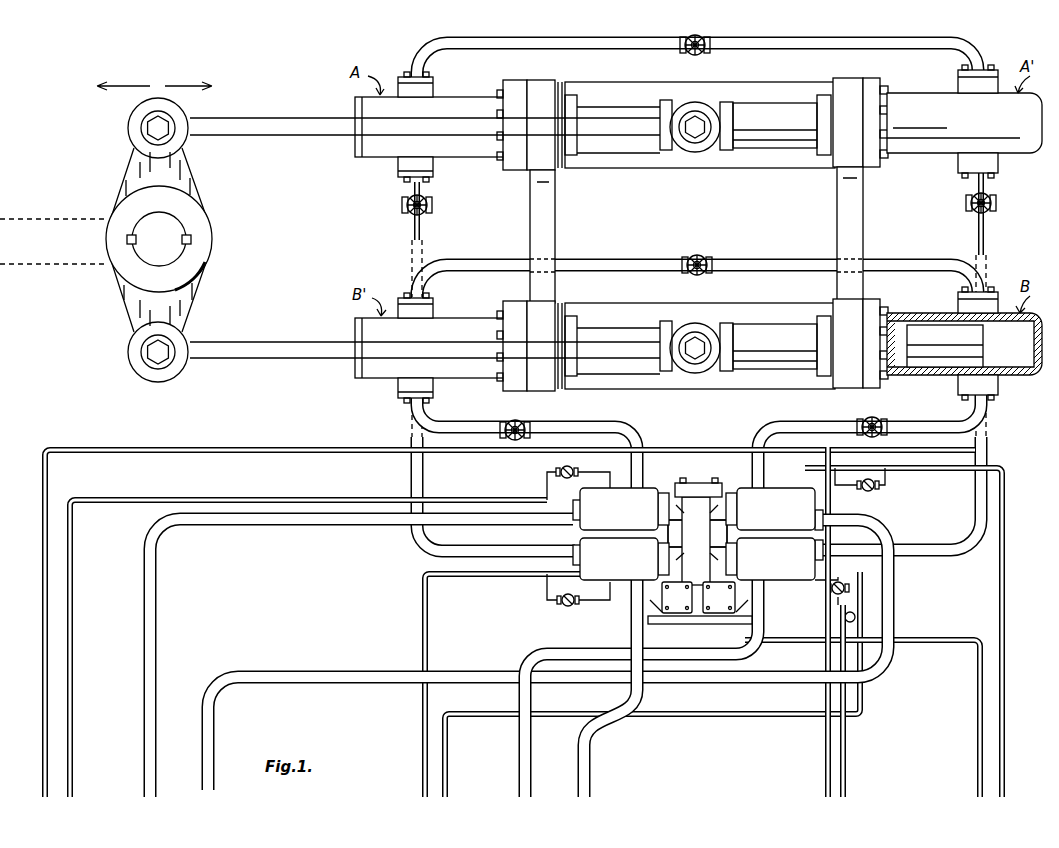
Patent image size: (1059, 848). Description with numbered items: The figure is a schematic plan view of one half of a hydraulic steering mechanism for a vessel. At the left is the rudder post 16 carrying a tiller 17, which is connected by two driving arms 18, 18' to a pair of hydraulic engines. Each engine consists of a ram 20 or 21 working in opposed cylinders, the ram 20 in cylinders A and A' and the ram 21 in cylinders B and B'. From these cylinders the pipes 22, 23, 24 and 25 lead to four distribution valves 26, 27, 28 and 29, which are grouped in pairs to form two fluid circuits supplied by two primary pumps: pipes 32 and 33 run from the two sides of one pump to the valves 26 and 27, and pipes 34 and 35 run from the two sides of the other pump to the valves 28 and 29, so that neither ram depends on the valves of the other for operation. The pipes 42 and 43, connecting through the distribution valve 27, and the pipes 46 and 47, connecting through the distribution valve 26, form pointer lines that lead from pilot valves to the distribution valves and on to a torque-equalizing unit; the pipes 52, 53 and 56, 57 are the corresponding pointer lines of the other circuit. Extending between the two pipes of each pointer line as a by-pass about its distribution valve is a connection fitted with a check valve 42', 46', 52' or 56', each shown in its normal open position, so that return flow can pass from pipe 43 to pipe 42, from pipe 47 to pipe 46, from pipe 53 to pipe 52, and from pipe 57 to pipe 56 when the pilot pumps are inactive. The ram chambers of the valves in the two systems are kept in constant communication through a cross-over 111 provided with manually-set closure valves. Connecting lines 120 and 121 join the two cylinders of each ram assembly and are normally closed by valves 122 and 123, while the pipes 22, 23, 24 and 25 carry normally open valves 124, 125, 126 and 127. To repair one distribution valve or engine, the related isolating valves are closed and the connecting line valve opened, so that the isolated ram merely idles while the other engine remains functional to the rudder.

The rudder post 16 is at (176, 254).
The tiller 17 is at (130, 312).
The driving arm 18 is at (425, 115).
The driving arm 18' is at (425, 337).
The ram 20 is at (626, 107).
The ram 21 is at (775, 330).
The pipe 22 is at (424, 232).
The pipe 23 is at (988, 230).
The pipe 24 is at (938, 423).
The pipe 25 is at (572, 426).
The distribution valve 26 is at (621, 559).
The distribution valve 27 is at (774, 559).
The distribution valve 28 is at (774, 509).
The distribution valve 29 is at (621, 509).
The pipe 32 is at (591, 765).
The pipe 33 is at (518, 762).
The pipe 34 is at (214, 725).
The pipe 35 is at (158, 622).
The pipe 42 is at (856, 701).
The check valve 42' is at (822, 599).
The pipe 43 is at (773, 718).
The pipe 46 is at (862, 718).
The check valve 46' is at (578, 604).
The pipe 47 is at (422, 708).
The pipe 52 is at (810, 622).
The check valve 52' is at (565, 476).
The pipe 53 is at (74, 735).
The pipe 56 is at (919, 632).
The check valve 56' is at (871, 488).
The pipe 57 is at (44, 778).
The cross-over 111 is at (677, 472).
The connecting line 120 is at (537, 48).
The connecting line 121 is at (633, 258).
The valve 122 is at (709, 52).
The valve 123 is at (710, 261).
The valve 124 is at (430, 205).
The valve 125 is at (968, 203).
The valve 126 is at (883, 436).
The valve 127 is at (510, 421).